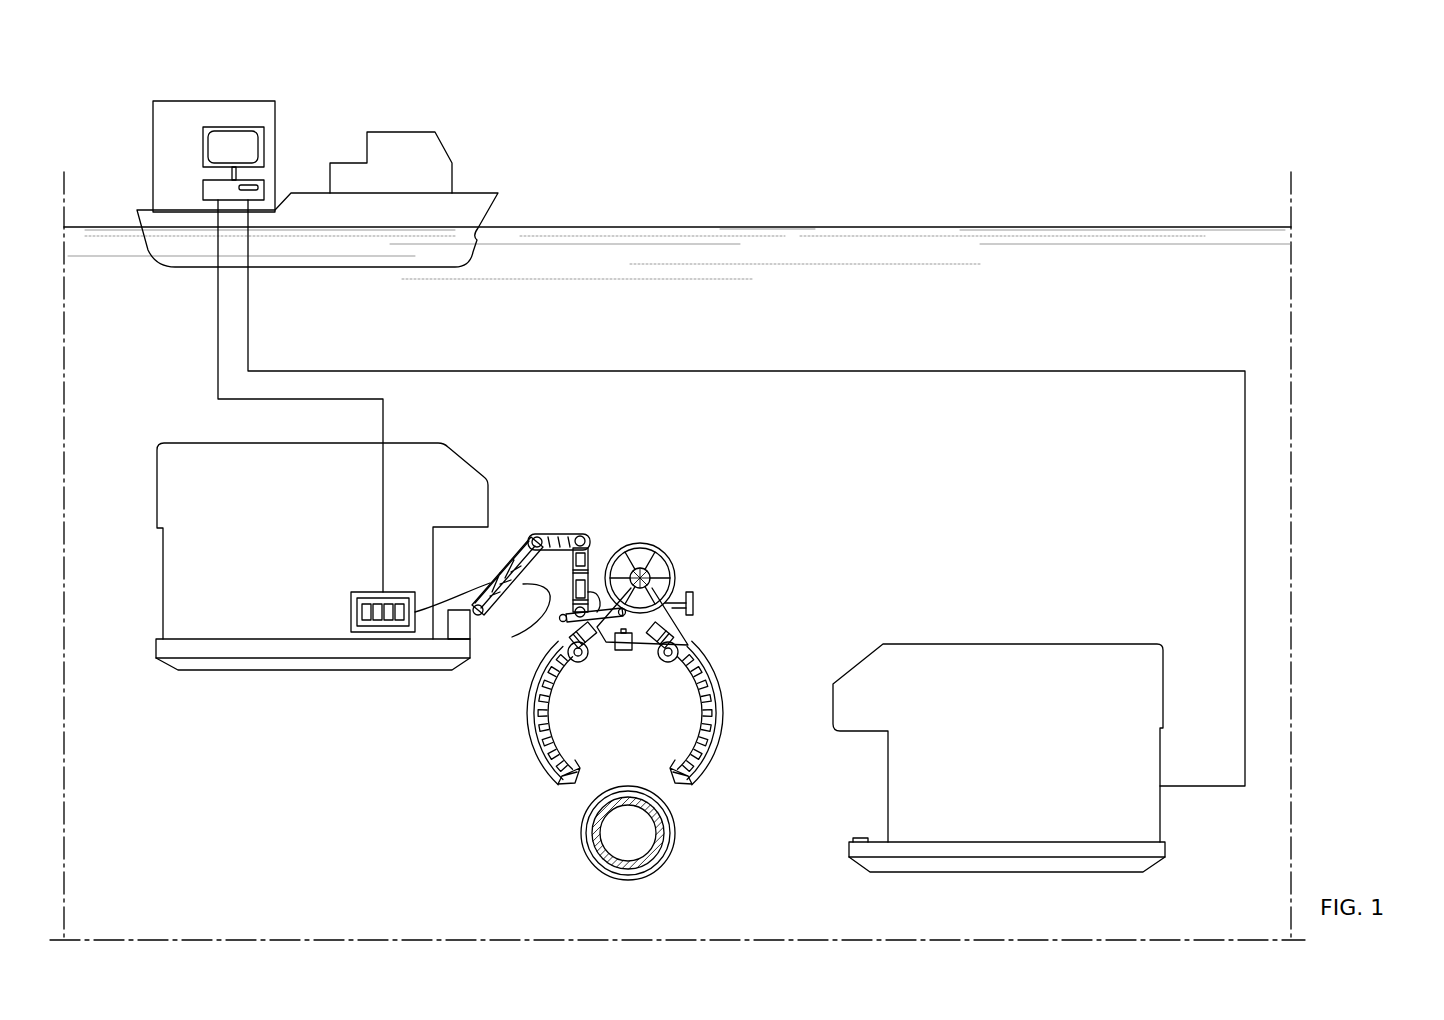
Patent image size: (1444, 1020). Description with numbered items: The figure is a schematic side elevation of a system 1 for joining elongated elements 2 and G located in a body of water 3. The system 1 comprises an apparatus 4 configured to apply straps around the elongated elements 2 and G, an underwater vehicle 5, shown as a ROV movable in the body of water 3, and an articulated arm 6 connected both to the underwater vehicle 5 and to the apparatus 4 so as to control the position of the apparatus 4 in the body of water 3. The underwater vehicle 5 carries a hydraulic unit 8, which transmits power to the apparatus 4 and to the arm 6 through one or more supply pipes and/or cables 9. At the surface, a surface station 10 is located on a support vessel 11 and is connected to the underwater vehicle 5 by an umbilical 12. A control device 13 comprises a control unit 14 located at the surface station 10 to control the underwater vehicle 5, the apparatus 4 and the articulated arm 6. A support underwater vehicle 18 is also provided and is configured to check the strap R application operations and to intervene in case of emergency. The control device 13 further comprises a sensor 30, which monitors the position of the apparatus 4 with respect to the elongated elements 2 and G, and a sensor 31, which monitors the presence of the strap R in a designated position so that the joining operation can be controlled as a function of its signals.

The system 1 is at (1045, 150).
The elongated element 2 is at (592, 856).
The body of water 3 is at (104, 333).
The apparatus 4 is at (652, 651).
The underwater vehicle 5 is at (322, 612).
The articulated arm 6 is at (557, 514).
The hydraulic unit 8 is at (375, 625).
The supply pipes and/or cables 9 is at (525, 640).
The surface station 10 is at (245, 129).
The support vessel 11 is at (428, 158).
The umbilical 12 is at (215, 357).
The control device 13 is at (352, 346).
The control unit 14 is at (245, 142).
The support underwater vehicle 18 is at (1004, 655).
The sensor 30 is at (710, 766).
The sensor 31 is at (640, 652).
The strap R is at (609, 560).
The elongated element G is at (664, 862).